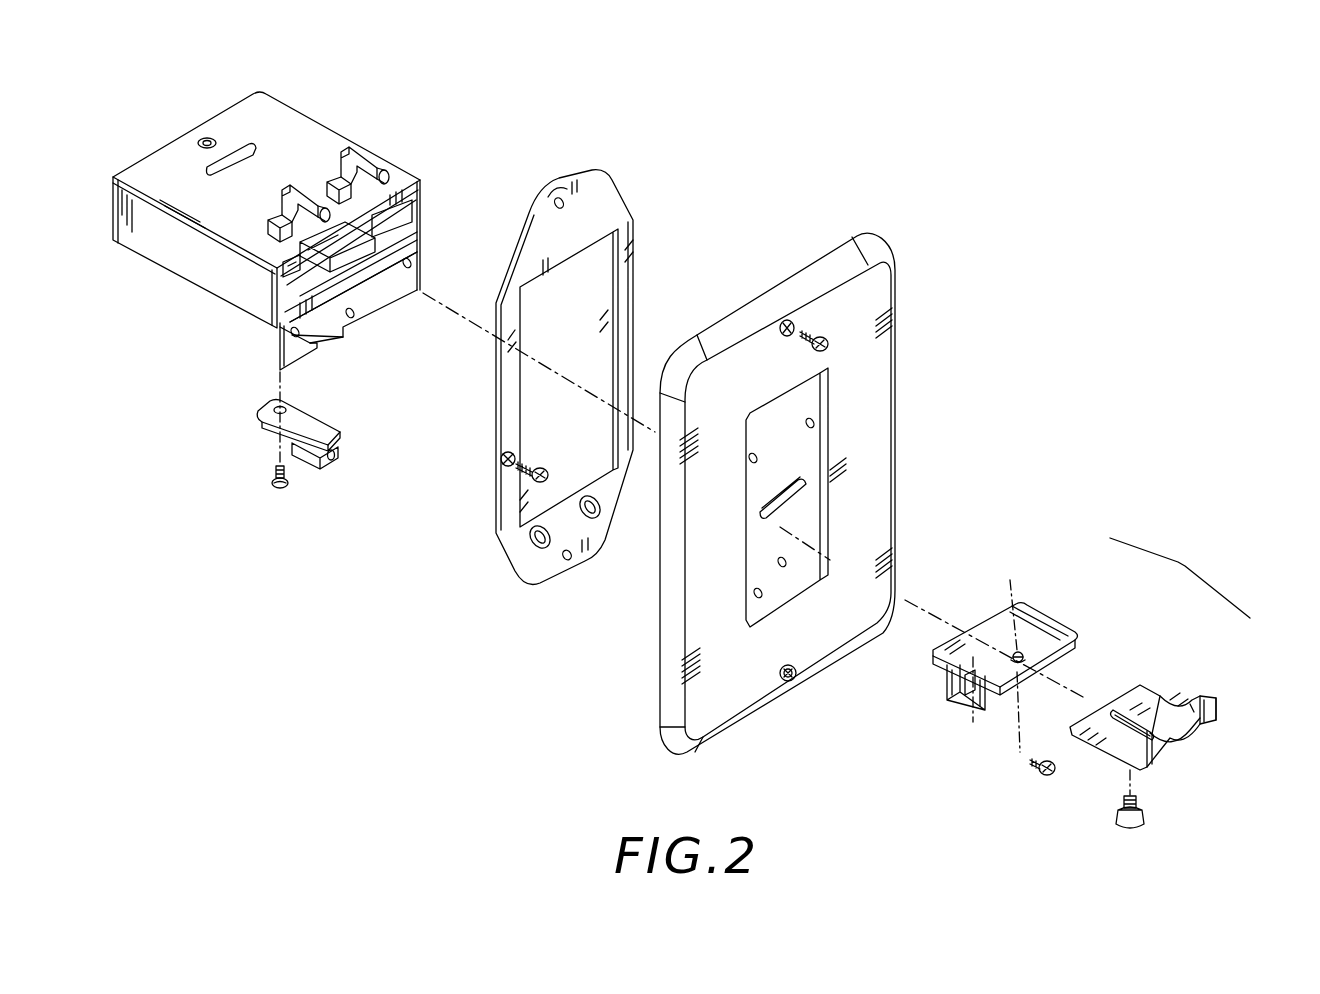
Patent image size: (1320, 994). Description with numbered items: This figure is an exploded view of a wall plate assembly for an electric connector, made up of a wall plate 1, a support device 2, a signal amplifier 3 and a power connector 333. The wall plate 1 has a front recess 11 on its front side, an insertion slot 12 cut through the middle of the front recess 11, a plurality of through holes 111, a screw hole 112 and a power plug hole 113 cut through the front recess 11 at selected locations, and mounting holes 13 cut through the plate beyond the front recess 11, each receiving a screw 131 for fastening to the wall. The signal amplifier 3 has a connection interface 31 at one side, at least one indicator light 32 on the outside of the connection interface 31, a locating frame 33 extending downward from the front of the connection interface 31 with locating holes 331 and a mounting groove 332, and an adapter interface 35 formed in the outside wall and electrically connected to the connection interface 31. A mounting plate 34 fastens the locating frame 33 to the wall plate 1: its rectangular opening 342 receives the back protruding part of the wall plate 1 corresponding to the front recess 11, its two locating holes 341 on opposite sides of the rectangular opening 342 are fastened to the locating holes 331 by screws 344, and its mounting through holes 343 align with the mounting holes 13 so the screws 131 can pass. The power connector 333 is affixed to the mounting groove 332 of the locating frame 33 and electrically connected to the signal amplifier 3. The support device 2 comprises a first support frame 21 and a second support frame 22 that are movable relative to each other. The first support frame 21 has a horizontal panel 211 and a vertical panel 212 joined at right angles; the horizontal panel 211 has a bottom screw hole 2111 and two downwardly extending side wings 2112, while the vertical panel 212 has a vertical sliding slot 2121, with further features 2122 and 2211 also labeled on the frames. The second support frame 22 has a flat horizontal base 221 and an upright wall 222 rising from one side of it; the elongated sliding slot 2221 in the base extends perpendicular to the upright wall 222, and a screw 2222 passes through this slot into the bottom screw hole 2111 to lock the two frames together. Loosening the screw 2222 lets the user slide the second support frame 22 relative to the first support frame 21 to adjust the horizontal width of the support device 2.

The wall plate 1 is at (896, 344).
The front recess 11 is at (810, 398).
The through holes 111 is at (814, 425).
The screw hole 112 is at (779, 565).
The power plug hole 113 is at (756, 598).
The insertion slot 12 is at (804, 484).
The mounting holes 13 is at (787, 318).
The screw 131 is at (852, 322).
The support device 2 is at (1180, 577).
The first support frame 21 is at (997, 667).
The horizontal panel 211 is at (1047, 630).
The bottom screw hole 2111 is at (1016, 610).
The vertical panel 212 is at (950, 694).
The side wings 2112 is at (958, 702).
The vertical sliding slot 2121 is at (980, 704).
The screw 2122 is at (1040, 768).
The second support frame 22 is at (1181, 732).
The flat horizontal base 221 is at (1182, 703).
The slot 2211 is at (1125, 710).
The upright wall 222 is at (1219, 719).
The elongated sliding slot 2221 is at (1195, 738).
The screw 2222 is at (1145, 822).
The signal amplifier 3 is at (203, 300).
The connection interface 31 is at (355, 265).
The indicator light 32 is at (370, 165).
The locating frame 33 is at (355, 303).
The locating holes 331 is at (411, 264).
The mounting groove 332 is at (320, 338).
The power connector 333 is at (328, 460).
The mounting plate 34 is at (540, 562).
The locating holes 341 is at (500, 462).
The rectangular opening 342 is at (625, 290).
The mounting through holes 343 is at (565, 204).
The screw 344 is at (540, 468).
The adapter interface 35 is at (255, 148).